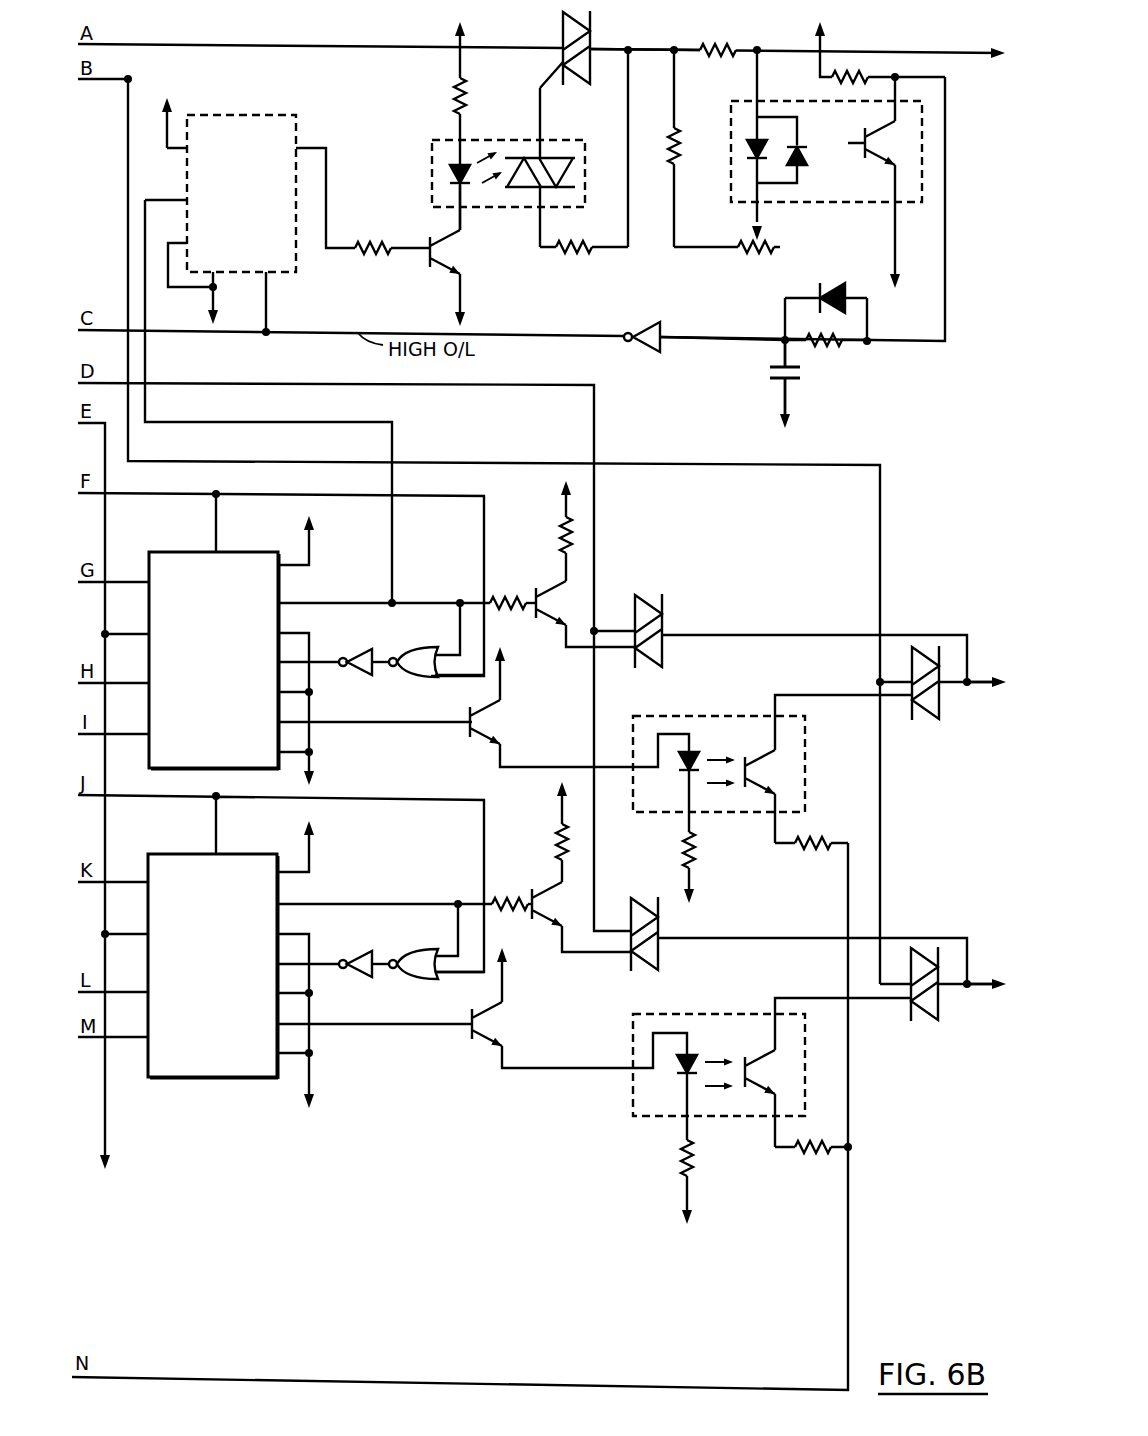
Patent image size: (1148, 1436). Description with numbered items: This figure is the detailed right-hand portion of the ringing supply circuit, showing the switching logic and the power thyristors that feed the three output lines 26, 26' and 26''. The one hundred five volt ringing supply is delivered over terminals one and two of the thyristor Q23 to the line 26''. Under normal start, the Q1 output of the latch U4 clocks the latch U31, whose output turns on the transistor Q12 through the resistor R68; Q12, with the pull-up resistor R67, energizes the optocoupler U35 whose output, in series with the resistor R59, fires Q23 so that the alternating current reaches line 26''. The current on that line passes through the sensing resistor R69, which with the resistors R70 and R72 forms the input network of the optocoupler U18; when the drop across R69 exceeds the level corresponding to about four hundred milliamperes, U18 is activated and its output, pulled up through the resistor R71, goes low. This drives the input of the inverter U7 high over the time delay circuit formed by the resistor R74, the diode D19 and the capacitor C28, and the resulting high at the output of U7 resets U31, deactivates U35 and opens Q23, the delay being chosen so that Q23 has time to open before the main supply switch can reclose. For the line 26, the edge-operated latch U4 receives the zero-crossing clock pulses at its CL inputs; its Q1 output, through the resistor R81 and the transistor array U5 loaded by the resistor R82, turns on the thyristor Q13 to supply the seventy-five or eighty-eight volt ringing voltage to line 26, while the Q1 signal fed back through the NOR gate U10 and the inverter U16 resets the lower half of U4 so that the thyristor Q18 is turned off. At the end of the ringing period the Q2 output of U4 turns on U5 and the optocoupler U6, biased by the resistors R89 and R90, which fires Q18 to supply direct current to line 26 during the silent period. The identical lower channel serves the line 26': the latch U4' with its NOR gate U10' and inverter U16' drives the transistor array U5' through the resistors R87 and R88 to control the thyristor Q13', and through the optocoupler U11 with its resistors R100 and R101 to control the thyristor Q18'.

The line 26 is at (983, 660).
The line 26' is at (985, 963).
The line 26'' is at (780, 36).
The latch U31 is at (250, 207).
The resistor R68 is at (390, 246).
The transistor Q12 is at (483, 258).
The resistor R67 is at (440, 93).
The optocoupler U35 is at (486, 147).
The thyristor Q23 is at (547, 46).
The resistor R59 is at (584, 151).
The resistor R69 is at (717, 62).
The resistor R70 is at (692, 148).
The resistor R72 is at (727, 248).
The optocoupler U18 is at (826, 183).
The resistor R71 is at (862, 52).
The diode D19 is at (826, 300).
The resistor R74 is at (826, 343).
The capacitor C28 is at (748, 400).
The inverter U7 is at (691, 340).
The latch U4 is at (308, 661).
The inverter U16 is at (367, 658).
The NOR gate U10 is at (436, 652).
The resistor R81 is at (513, 599).
The resistor R82 is at (547, 526).
The transistor array U5 is at (546, 667).
The thyristor Q13 is at (793, 638).
The optocoupler U6 is at (765, 767).
The resistor R89 is at (709, 867).
The resistor R90 is at (811, 843).
The thyristor Q18 is at (926, 703).
The latch U4' is at (309, 971).
The inverter U16' is at (357, 960).
The NOR gate U10' is at (436, 954).
The resistor R87 is at (511, 900).
The resistor R88 is at (544, 828).
The transistor array U5' is at (542, 971).
The thyristor Q13' is at (791, 941).
The optocoupler U11 is at (764, 1069).
The resistor R100 is at (667, 1200).
The resistor R101 is at (813, 1149).
The thyristor Q18' is at (943, 1010).